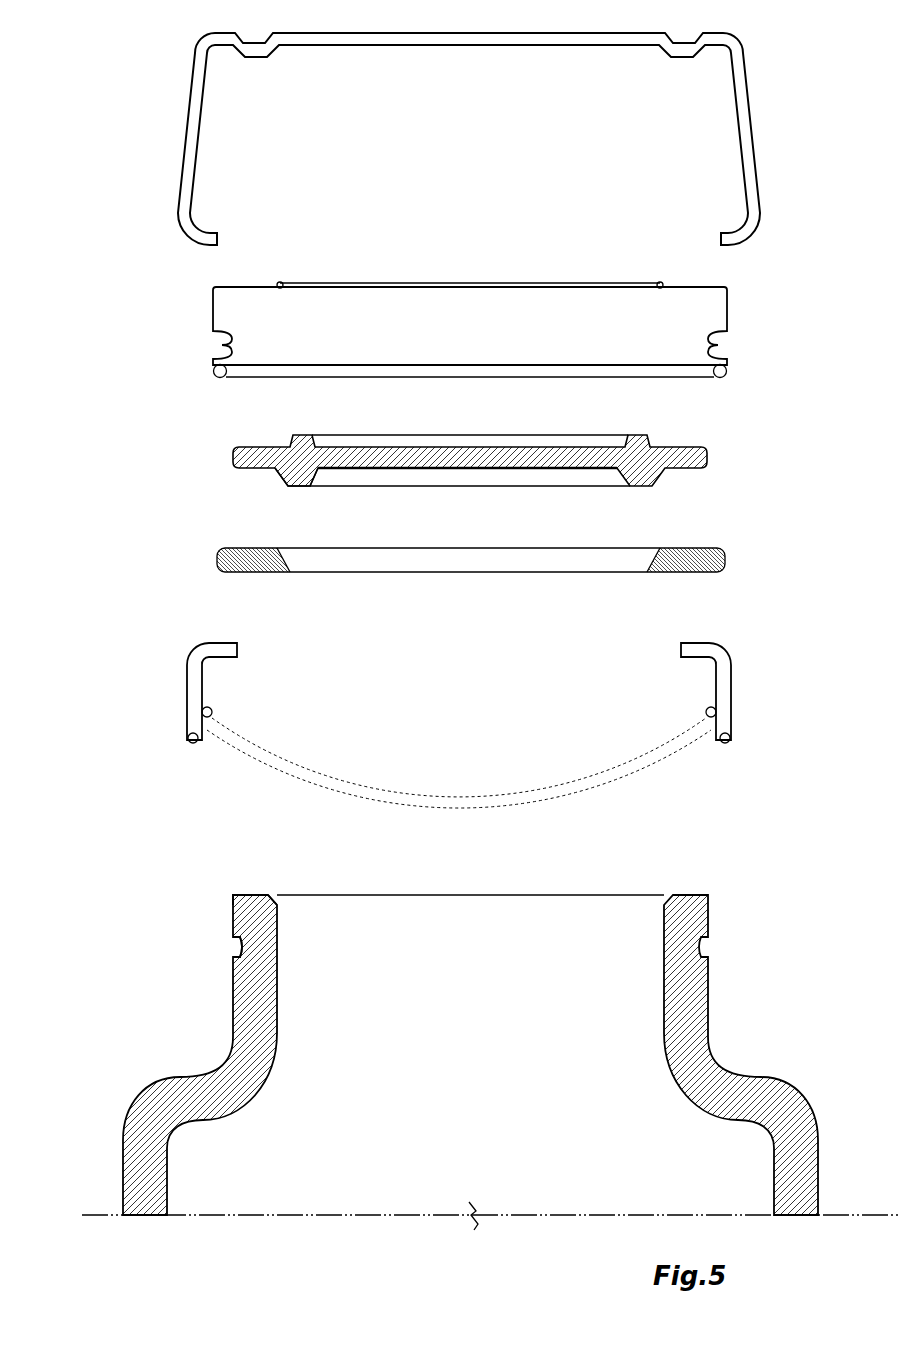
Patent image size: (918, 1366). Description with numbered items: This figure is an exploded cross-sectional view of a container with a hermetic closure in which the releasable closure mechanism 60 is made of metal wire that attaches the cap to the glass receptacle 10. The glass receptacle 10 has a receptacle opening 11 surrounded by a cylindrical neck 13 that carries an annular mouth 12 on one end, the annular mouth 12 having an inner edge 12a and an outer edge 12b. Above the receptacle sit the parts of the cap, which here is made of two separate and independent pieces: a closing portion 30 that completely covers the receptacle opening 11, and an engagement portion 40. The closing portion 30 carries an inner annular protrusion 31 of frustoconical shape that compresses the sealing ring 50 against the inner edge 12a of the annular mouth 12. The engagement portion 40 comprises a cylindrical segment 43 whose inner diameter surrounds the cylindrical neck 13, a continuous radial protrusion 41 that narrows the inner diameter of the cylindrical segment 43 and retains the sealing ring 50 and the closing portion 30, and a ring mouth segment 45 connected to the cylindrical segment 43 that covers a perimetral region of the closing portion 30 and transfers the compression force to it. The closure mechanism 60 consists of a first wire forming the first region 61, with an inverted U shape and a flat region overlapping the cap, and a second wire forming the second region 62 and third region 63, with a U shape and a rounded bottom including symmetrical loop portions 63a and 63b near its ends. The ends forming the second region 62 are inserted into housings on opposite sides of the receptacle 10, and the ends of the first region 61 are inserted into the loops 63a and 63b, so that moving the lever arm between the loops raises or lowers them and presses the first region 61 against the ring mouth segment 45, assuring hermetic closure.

The glass receptacle 10 is at (664, 1030).
The receptacle opening 11 is at (455, 893).
The annular mouth 12 is at (248, 893).
The inner edge of the annular mouth 12a is at (270, 893).
The outer edge of the annular mouth 12b is at (231, 893).
The cylindrical neck 13 is at (233, 917).
The closing portion 30 is at (233, 458).
The inner annular protrusion 31 is at (302, 487).
The engagement portion 40 is at (140, 378).
The radial protrusion 41 is at (225, 340).
The cylindrical segment 43 is at (213, 308).
The ring mouth segment 45 is at (253, 287).
The sealing ring 50 is at (217, 560).
The closure mechanism 60 is at (80, 745).
The first region 61 is at (180, 200).
The second region 62 is at (195, 648).
The third region 63 is at (578, 680).
The symmetrical portion in the form of a loop 63a is at (188, 737).
The symmetrical portion in the form of a loop 63b is at (706, 711).